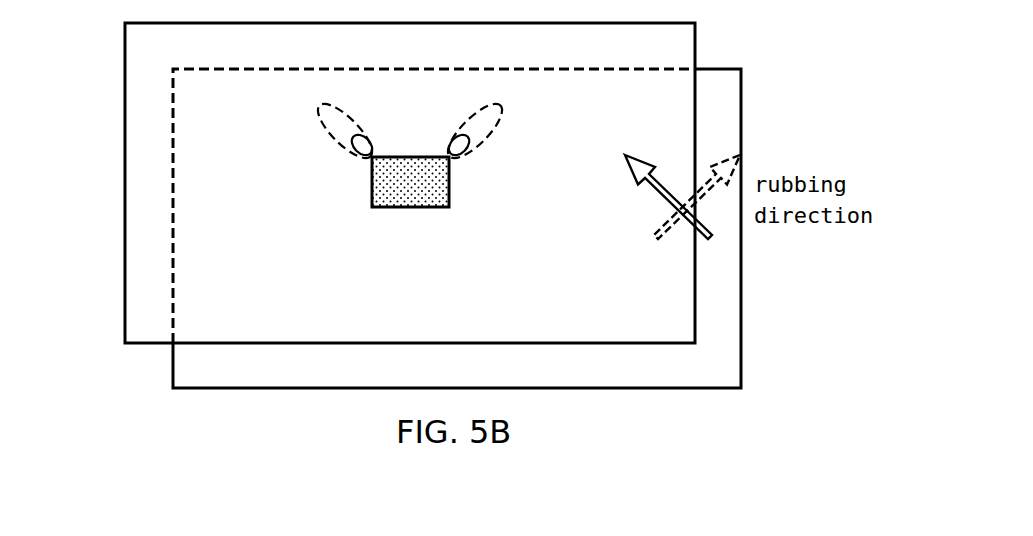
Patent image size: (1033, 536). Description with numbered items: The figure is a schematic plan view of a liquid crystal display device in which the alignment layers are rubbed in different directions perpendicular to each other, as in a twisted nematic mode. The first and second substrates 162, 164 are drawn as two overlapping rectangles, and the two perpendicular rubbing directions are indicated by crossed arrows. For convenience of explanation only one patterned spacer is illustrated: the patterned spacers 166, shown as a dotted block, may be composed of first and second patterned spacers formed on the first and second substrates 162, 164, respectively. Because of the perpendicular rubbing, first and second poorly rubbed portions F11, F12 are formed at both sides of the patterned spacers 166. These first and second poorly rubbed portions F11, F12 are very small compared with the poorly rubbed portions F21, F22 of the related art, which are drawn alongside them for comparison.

The first substrate 162 is at (185, 371).
The second substrate 164 is at (138, 215).
The patterned spacers 166 is at (412, 192).
The first poorly rubbed portion F11 is at (368, 140).
The second poorly rubbed portion F12 is at (452, 140).
The poorly rubbed portion of the related art F21 is at (346, 140).
The poorly rubbed portion of the related art F22 is at (474, 140).